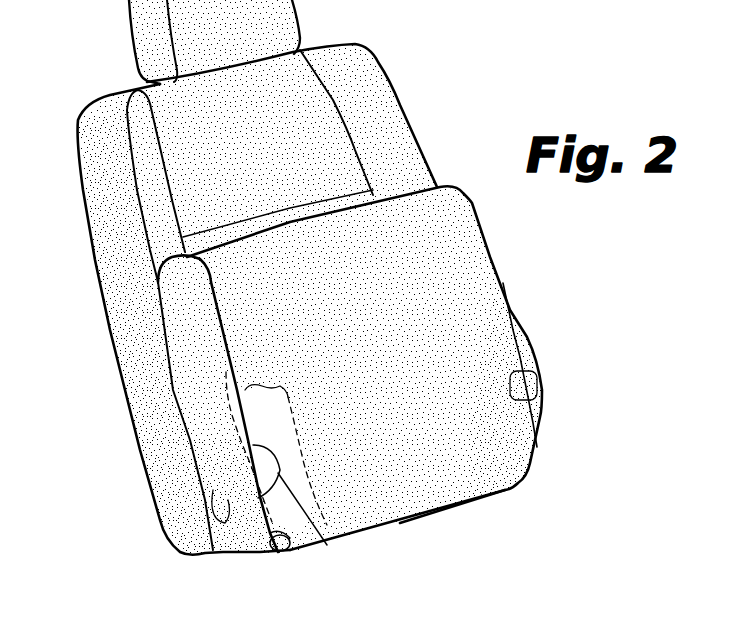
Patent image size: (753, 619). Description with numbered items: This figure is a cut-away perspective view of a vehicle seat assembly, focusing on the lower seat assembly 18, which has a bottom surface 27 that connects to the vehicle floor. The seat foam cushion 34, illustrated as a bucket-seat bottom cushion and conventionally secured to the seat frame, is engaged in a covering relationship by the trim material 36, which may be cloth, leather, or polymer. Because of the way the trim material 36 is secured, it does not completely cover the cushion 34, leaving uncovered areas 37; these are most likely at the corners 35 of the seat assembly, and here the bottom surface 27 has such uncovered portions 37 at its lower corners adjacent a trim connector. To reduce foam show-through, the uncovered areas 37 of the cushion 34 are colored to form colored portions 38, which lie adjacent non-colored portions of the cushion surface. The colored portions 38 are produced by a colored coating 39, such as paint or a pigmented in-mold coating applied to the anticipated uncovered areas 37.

The lower seat assembly 18 is at (183, 313).
The bottom surface 27 is at (475, 288).
The seat foam cushion 34 is at (280, 434).
The corners 35 is at (285, 545).
The trim material 36 is at (410, 460).
The uncovered areas 37 is at (517, 390).
The colored portions 38 is at (253, 441).
The colored coating 39 is at (330, 540).